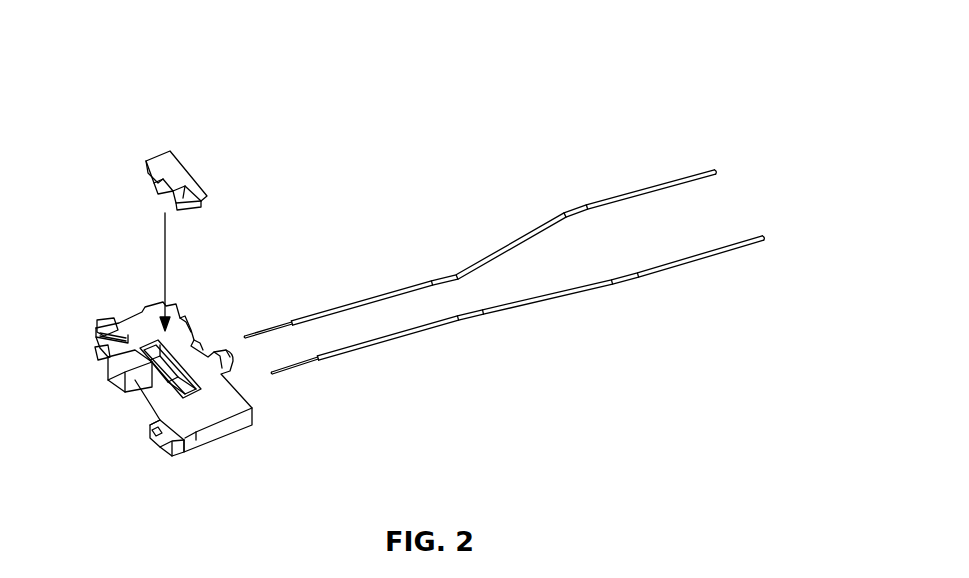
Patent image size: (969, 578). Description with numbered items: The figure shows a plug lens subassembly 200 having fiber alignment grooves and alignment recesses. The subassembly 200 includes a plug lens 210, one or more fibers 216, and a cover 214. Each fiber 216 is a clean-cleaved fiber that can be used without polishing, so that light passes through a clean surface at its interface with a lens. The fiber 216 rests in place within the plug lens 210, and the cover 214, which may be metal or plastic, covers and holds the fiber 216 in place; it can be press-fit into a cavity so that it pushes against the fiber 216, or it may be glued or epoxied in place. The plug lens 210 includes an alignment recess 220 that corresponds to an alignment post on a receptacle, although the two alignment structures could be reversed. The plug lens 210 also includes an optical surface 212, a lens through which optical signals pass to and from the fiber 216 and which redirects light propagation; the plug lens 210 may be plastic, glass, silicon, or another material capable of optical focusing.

The plug lens subassembly 200 is at (164, 38).
The plug lens 210 is at (222, 437).
The optical surface 212 is at (122, 381).
The cover 214 is at (158, 153).
The fiber 216 is at (505, 245).
The alignment recess 220 is at (160, 437).